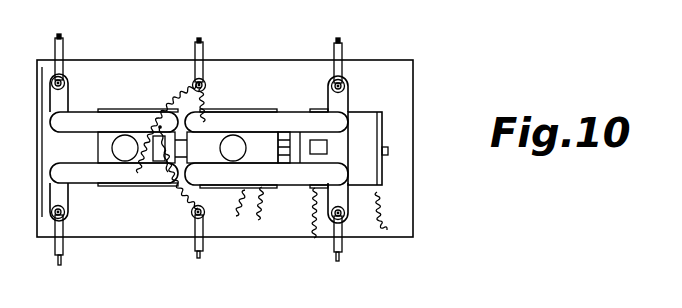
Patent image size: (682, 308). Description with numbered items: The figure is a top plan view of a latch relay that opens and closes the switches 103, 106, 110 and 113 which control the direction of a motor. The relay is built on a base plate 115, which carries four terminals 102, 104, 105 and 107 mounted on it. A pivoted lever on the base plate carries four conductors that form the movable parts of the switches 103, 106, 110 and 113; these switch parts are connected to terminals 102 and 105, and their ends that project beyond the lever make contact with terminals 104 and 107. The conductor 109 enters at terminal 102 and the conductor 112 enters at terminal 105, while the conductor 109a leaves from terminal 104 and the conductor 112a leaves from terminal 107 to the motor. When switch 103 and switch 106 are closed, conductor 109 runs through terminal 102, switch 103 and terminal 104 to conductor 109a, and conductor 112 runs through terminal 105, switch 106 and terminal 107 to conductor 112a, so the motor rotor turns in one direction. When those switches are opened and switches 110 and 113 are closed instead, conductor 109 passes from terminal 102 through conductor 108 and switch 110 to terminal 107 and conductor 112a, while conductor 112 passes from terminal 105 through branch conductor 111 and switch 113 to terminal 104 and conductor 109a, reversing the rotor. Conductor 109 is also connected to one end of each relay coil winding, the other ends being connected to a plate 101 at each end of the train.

The plate 101 is at (311, 248).
The terminal 102 is at (206, 216).
The switch 103 is at (115, 122).
The terminal 104 is at (65, 80).
The terminal 105 is at (204, 78).
The switch 106 is at (113, 178).
The terminal 107 is at (65, 212).
The conductor 108 is at (203, 192).
The conductor 109 is at (60, 37).
The conductor 109a is at (343, 45).
The switch 110 is at (269, 178).
The branch conductor 111 is at (205, 100).
The conductor 112 is at (198, 40).
The conductor 112a is at (342, 258).
The switch 113 is at (262, 120).
The base plate 115 is at (277, 236).